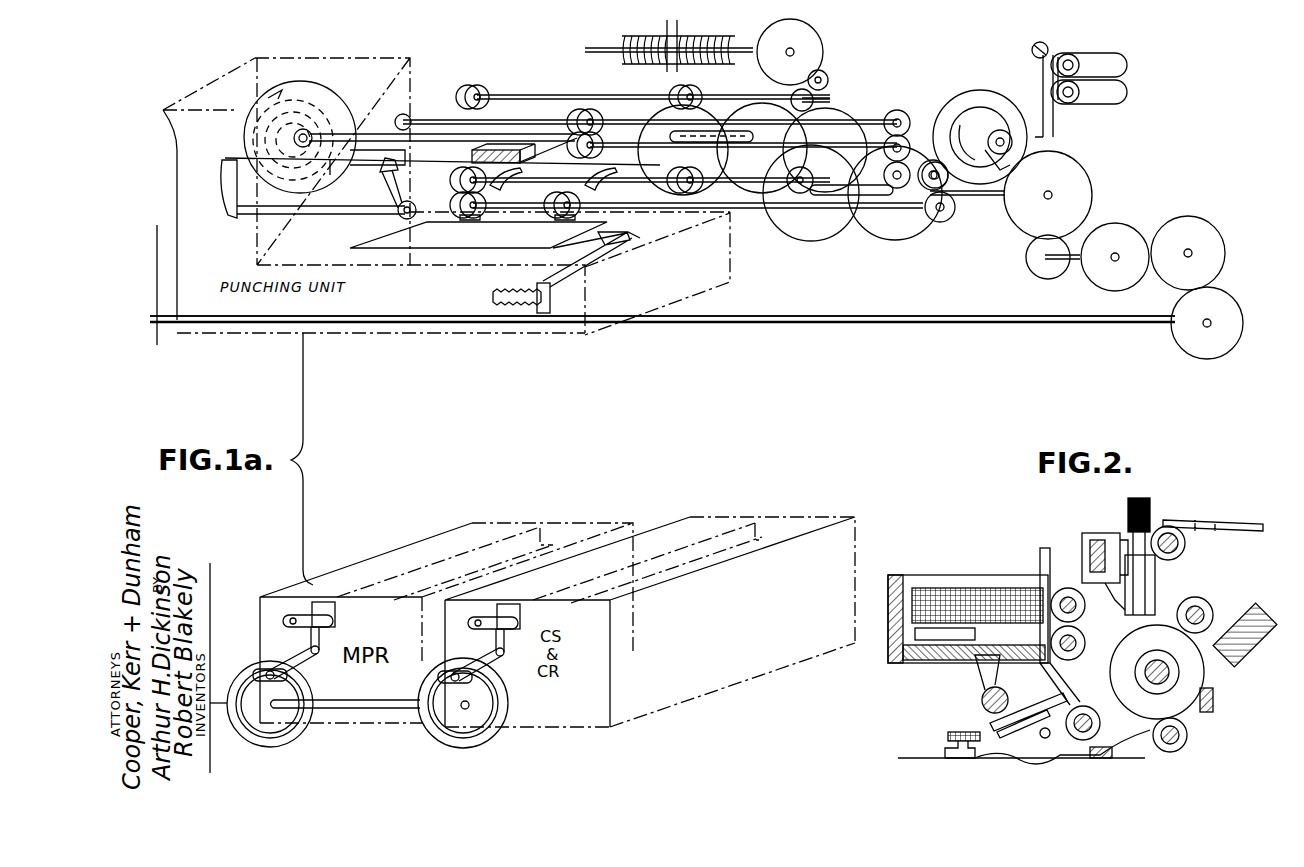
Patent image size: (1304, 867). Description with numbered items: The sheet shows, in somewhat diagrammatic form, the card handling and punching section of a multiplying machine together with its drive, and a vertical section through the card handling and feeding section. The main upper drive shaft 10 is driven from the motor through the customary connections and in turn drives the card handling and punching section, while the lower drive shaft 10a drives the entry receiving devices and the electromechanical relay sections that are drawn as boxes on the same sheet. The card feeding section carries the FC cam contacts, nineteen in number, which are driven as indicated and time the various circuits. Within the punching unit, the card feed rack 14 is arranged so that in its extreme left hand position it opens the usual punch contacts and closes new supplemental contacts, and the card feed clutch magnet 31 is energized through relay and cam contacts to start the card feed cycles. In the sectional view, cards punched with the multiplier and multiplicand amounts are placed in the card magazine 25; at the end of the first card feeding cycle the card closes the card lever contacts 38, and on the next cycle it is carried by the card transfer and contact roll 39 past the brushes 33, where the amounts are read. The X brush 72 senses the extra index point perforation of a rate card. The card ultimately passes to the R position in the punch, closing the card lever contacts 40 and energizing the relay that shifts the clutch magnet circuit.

In FIG. 1A, the card feed clutch magnet 31 is at (1096, 60).
In FIG. 1A, the card feed rack 14 is at (551, 298).
In FIG. 1A, the main upper drive shaft 10 is at (896, 319).
In FIG. 1A, the lower drive shaft 10a is at (218, 703).
In FIG. 1A, the FC cam contacts FC is at (635, 67).
In FIG. 1A, the R position R is at (478, 235).
In FIG. 2, the card magazine 25 is at (905, 580).
In FIG. 2, the X brush 72 is at (1110, 612).
In FIG. 2, the card lever contacts 38 is at (1140, 560).
In FIG. 2, the card transfer and contact roll 39 is at (1112, 660).
In FIG. 2, the card lever contacts 40 is at (1000, 730).
In FIG. 2, the brushes 33 is at (1205, 652).